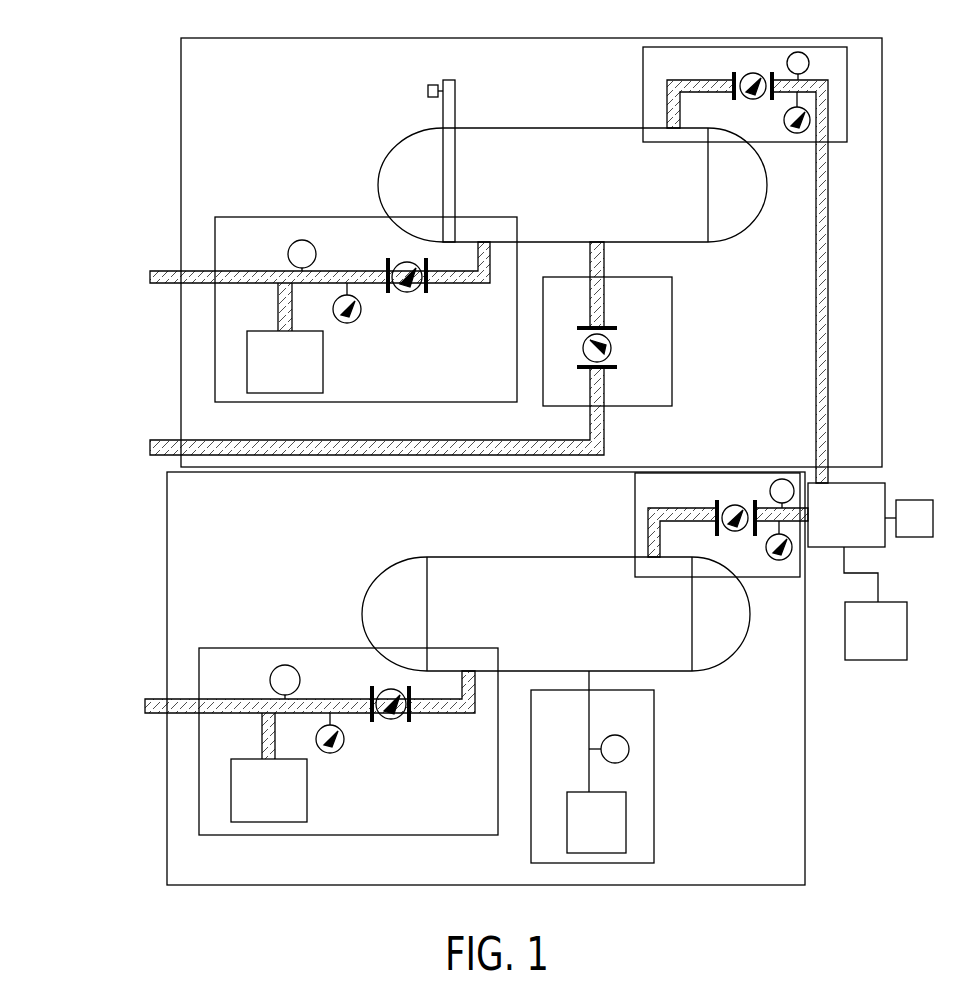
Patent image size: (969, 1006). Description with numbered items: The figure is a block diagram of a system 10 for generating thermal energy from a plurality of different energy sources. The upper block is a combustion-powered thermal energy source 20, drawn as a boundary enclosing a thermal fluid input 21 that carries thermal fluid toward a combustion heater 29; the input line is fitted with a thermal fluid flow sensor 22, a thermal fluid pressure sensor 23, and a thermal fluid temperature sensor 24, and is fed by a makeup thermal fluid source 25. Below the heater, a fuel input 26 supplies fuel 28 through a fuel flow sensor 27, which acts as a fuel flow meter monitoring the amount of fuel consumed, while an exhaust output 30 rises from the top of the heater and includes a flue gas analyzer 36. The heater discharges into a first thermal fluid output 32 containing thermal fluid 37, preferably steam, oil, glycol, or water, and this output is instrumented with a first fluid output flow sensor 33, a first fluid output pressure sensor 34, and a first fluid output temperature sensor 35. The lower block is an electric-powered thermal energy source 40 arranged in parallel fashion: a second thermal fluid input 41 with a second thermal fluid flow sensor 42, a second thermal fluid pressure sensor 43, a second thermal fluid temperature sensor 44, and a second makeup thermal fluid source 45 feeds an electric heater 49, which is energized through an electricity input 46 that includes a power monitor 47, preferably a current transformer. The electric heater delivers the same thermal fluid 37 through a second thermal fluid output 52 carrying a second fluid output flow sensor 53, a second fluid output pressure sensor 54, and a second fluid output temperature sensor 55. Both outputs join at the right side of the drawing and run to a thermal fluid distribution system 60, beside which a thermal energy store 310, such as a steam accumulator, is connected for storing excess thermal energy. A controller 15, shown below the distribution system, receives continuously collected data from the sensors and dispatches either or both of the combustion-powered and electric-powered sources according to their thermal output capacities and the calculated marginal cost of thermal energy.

The system 10 is at (92, 116).
The controller 15 is at (881, 660).
The combustion-powered thermal energy source 20 is at (181, 70).
The thermal fluid input 21 is at (215, 237).
The thermal fluid flow sensor 22 is at (411, 292).
The thermal fluid pressure sensor 23 is at (357, 322).
The thermal fluid temperature sensor 24 is at (302, 240).
The makeup thermal fluid source 25 is at (247, 360).
The fuel input 26 is at (672, 385).
The fuel flow sensor 27 is at (607, 343).
The fuel 28 is at (604, 420).
The combustion heater 29 is at (402, 162).
The exhaust output 30 is at (455, 105).
The first thermal fluid output 32 is at (643, 97).
The first fluid output flow sensor 33 is at (740, 80).
The first fluid output pressure sensor 34 is at (802, 133).
The first fluid output temperature sensor 35 is at (805, 68).
The flue gas analyzer 36 is at (428, 91).
The thermal fluid 37 is at (828, 242).
The electric-powered thermal energy source 40 is at (167, 497).
The second thermal fluid input 41 is at (199, 668).
The second thermal fluid flow sensor 42 is at (396, 719).
The second thermal fluid pressure sensor 43 is at (336, 752).
The second thermal fluid temperature sensor 44 is at (285, 665).
The second makeup thermal fluid source 45 is at (231, 790).
The electricity input 46 is at (626, 831).
The power monitor 47 is at (628, 751).
The electric heater 49 is at (382, 592).
The second thermal fluid output 52 is at (635, 502).
The second fluid output flow sensor 53 is at (722, 506).
The second fluid output pressure sensor 54 is at (784, 560).
The second fluid output temperature sensor 55 is at (792, 482).
The thermal fluid distribution system 60 is at (885, 540).
The thermal energy store 310 is at (914, 500).